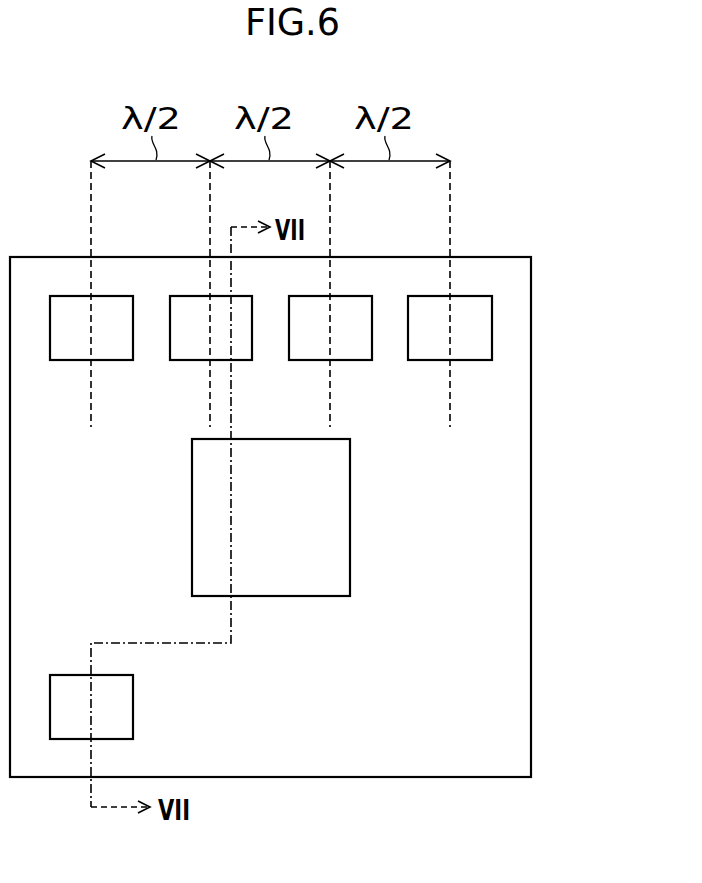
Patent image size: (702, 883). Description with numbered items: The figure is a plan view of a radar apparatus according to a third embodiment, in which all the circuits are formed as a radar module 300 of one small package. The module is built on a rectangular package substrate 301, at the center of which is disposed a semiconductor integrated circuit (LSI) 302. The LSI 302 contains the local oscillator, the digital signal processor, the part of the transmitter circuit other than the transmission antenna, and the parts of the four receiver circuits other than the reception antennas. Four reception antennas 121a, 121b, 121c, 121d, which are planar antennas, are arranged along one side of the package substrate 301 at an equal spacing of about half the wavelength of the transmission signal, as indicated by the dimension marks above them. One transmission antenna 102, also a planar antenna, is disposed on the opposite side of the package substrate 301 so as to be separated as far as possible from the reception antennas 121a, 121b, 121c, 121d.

The radar module 300 is at (576, 100).
The package substrate 301 is at (531, 733).
The semiconductor integrated circuit (LSI) 302 is at (350, 515).
The transmission antenna 102 is at (133, 707).
The reception antenna 121a is at (115, 360).
The reception antenna 121b is at (248, 360).
The reception antenna 121c is at (350, 360).
The reception antenna 121d is at (466, 360).